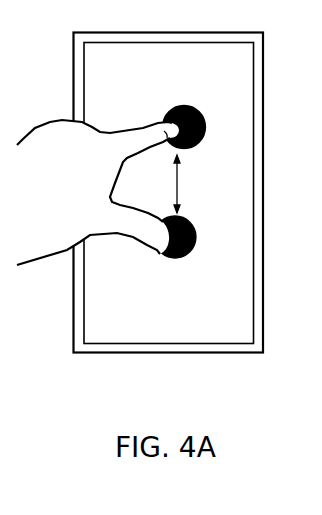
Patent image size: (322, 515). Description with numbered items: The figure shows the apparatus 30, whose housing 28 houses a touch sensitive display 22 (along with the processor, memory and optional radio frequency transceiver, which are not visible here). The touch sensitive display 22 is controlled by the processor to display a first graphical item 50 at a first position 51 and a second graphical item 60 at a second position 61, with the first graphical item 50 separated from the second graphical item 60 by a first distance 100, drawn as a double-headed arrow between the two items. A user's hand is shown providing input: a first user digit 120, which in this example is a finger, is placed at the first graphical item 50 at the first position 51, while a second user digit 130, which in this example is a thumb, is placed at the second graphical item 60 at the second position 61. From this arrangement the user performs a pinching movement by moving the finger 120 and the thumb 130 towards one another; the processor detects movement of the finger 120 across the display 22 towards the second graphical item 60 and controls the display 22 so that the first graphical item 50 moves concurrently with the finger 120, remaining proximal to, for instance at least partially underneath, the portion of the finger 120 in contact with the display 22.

The touch sensitive display 22 is at (104, 310).
The housing 28 is at (265, 343).
The apparatus 30 is at (235, 361).
The first graphical item 50 is at (192, 104).
The first position 51 is at (203, 140).
The second graphical item 60 is at (173, 259).
The second position 61 is at (171, 259).
The first distance 100 is at (182, 195).
The first user digit 120 is at (163, 118).
The second user digit 130 is at (153, 240).